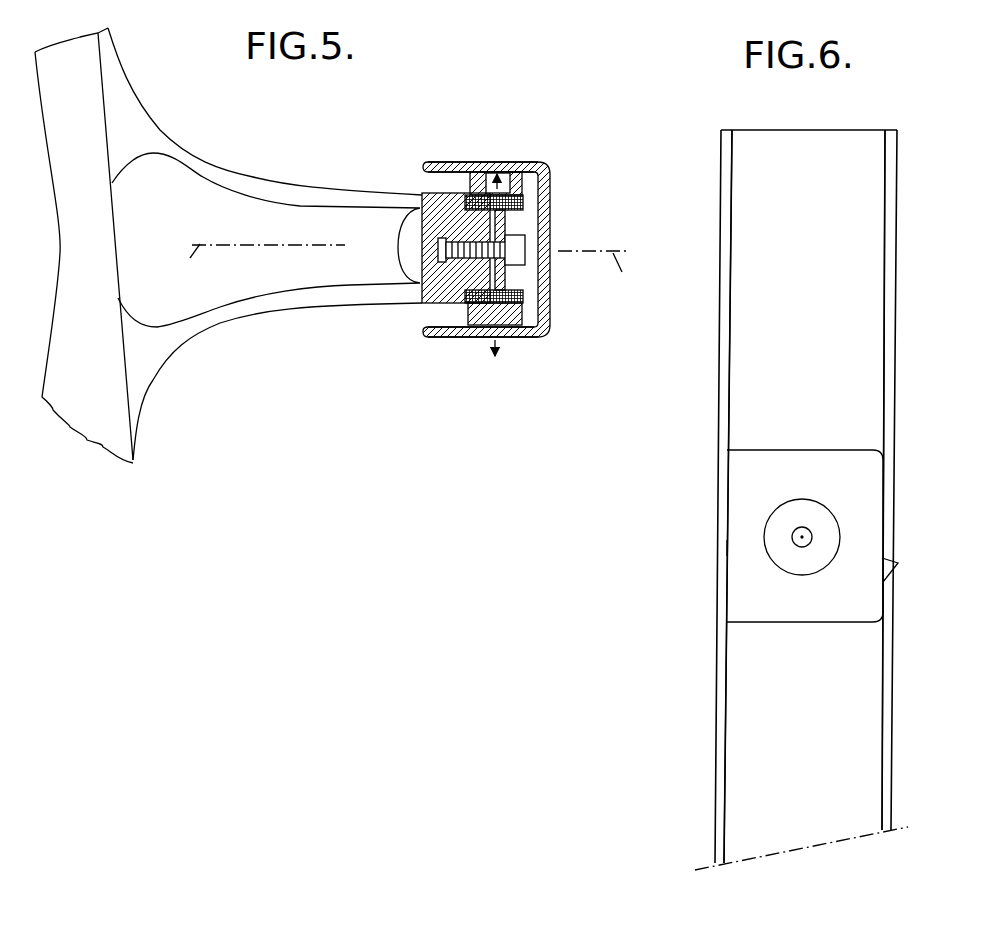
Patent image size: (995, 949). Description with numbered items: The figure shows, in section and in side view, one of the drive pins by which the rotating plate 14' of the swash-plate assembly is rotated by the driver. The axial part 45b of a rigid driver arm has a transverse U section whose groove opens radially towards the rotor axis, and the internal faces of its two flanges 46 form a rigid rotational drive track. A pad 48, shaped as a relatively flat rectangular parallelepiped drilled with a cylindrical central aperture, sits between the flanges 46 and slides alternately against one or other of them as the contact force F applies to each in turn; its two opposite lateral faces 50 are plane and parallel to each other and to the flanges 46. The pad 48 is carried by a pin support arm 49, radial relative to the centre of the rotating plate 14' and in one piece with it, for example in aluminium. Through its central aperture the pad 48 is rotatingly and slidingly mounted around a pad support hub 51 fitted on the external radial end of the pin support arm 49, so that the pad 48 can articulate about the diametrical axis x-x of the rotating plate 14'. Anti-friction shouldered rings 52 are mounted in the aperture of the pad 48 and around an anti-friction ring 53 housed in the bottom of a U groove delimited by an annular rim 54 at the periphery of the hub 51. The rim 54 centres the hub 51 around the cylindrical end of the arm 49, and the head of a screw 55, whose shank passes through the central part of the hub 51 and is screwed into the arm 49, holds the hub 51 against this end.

In FIG. 5, the rotating plate 14' is at (128, 245).
In FIG. 5, the axial part of the arm 45b is at (545, 270).
In FIG. 6, the axial part of the arm 45b is at (711, 793).
In FIG. 5, the flanges 46 is at (433, 163).
In FIG. 6, the flanges 46 is at (720, 740).
In FIG. 5, the pad 48 is at (483, 162).
In FIG. 6, the pad 48 is at (772, 602).
In FIG. 5, the pin support arm 49 is at (297, 293).
In FIG. 6, the lateral faces 50 is at (727, 548).
In FIG. 5, the pad support hub 51 is at (510, 277).
In FIG. 5, the anti-friction shouldered rings 52 is at (470, 307).
In FIG. 5, the anti-friction ring 53 is at (467, 205).
In FIG. 5, the annular rim 54 is at (523, 203).
In FIG. 5, the screw 55 is at (438, 255).